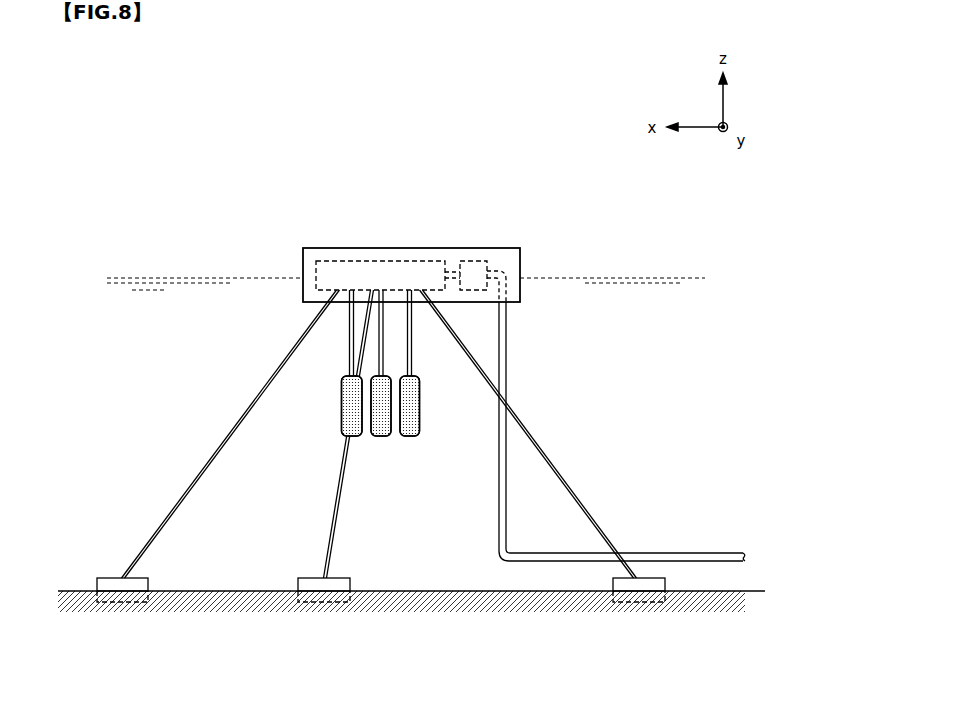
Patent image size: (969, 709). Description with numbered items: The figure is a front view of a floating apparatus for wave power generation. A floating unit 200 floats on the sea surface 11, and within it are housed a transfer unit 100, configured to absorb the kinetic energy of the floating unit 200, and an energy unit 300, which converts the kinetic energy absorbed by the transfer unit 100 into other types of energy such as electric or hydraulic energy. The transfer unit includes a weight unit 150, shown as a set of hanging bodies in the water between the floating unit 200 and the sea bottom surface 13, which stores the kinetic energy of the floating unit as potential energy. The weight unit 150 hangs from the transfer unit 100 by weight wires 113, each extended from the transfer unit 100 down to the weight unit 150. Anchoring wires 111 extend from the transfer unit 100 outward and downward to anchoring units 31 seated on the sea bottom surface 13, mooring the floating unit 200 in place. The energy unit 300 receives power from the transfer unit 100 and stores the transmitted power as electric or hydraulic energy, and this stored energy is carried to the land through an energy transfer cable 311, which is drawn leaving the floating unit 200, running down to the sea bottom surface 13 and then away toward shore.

The sea surface 11 is at (172, 280).
The sea bottom surface 13 is at (236, 591).
The anchoring unit 31 is at (137, 583).
The transfer unit 100 is at (417, 261).
The anchoring wire 111 is at (238, 418).
The weight wire 113 is at (350, 337).
The weight unit 150 is at (350, 423).
The floating unit 200 is at (327, 248).
The energy unit 300 is at (470, 261).
The energy transfer cable 311 is at (506, 358).